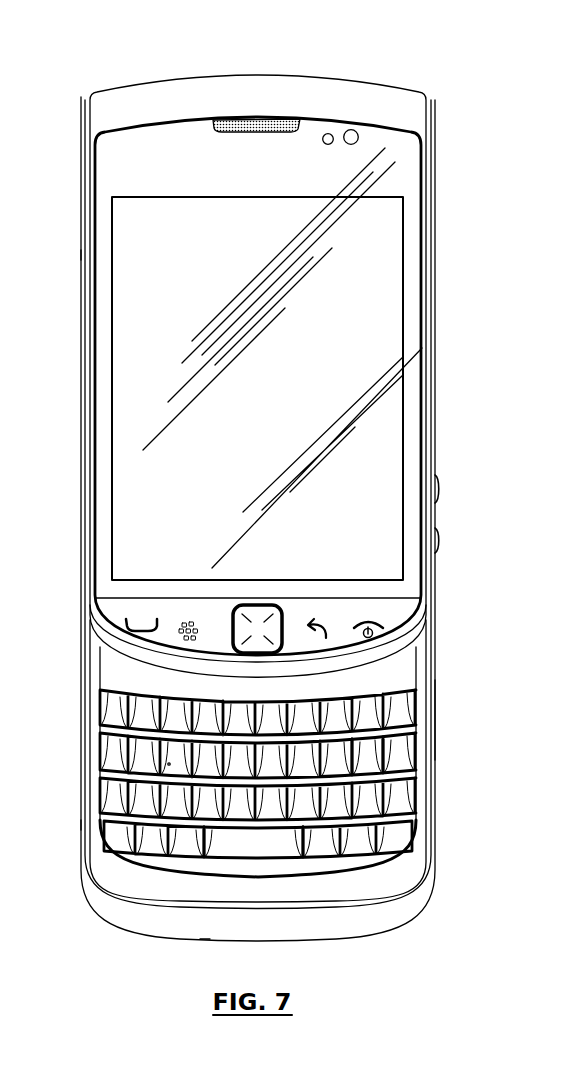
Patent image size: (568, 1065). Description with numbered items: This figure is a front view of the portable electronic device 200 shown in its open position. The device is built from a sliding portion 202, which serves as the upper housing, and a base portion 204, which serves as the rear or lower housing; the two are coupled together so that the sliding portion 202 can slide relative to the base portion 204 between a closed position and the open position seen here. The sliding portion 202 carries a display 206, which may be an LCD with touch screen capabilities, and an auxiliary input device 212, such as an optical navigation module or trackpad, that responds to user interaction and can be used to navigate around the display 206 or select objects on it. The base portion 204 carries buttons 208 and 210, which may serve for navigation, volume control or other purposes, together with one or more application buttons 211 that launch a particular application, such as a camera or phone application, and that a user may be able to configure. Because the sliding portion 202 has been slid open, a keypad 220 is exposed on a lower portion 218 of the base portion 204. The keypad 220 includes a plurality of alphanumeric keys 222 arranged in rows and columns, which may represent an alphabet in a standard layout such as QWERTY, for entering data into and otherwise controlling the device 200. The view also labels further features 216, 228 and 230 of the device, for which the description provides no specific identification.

The portable electronic device 200 is at (217, 62).
The sliding portion 202 is at (122, 107).
The base portion 204 is at (78, 670).
The display 206 is at (375, 295).
The button 208 is at (437, 487).
The button 210 is at (437, 545).
The application button 211 is at (440, 705).
The auxiliary input device 212 is at (262, 627).
The side surface 216 is at (40, 252).
The lower portion 218 is at (68, 795).
The keypad 220 is at (373, 757).
The alphanumeric keys 222 is at (372, 812).
The bottom edge 228 is at (105, 952).
The lower housing side 230 is at (40, 824).